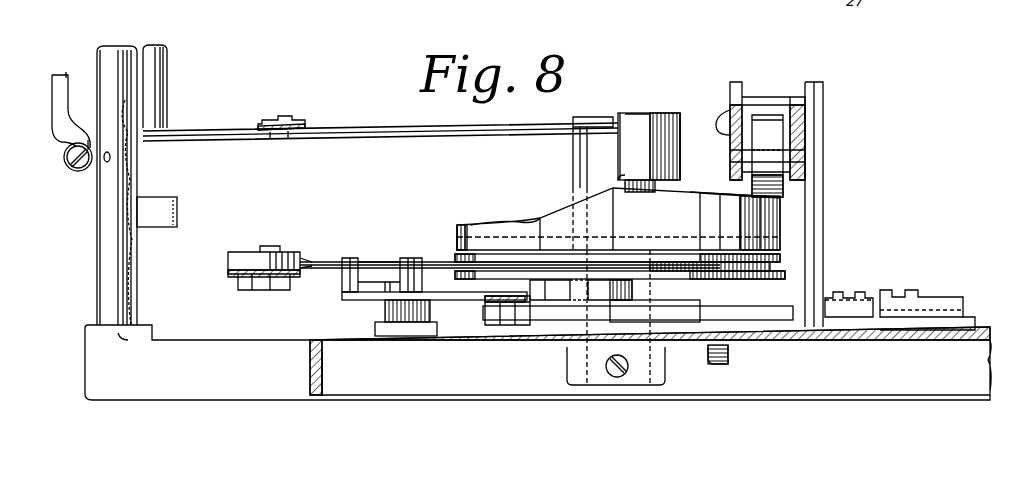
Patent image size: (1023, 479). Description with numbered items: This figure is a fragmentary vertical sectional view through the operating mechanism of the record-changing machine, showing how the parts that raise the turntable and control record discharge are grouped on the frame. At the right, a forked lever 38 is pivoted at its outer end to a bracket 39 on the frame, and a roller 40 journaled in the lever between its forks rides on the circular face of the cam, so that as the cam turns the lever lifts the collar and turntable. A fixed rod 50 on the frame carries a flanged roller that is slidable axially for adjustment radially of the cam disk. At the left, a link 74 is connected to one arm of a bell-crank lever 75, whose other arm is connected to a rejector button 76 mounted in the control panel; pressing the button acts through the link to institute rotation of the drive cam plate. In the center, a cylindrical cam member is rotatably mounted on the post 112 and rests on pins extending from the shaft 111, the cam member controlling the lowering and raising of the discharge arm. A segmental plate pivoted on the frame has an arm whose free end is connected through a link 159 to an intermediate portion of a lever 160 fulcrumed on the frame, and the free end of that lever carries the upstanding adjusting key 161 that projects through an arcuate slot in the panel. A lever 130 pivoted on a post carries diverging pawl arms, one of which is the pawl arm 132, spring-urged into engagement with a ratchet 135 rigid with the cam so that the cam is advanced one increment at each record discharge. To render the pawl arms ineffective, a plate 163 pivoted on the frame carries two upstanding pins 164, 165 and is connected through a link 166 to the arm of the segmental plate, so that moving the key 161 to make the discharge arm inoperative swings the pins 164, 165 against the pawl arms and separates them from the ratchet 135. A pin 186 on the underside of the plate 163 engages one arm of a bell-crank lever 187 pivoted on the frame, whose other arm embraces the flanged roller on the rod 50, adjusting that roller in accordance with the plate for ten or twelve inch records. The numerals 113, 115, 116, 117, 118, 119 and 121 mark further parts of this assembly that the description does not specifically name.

The forked lever 38 is at (805, 112).
The bracket 39 is at (823, 152).
The roller 40 is at (762, 114).
The fixed rod 50 is at (785, 312).
The link 74 is at (168, 202).
The bell-crank lever 75 is at (92, 172).
The rejector button 76 is at (66, 72).
The shaft 111 is at (572, 215).
The post 112 is at (452, 236).
The column 113 is at (573, 154).
The lower plate 115 is at (782, 275).
The lip 116 is at (540, 280).
The block 117 is at (563, 280).
The block 118 is at (605, 278).
The nut 119 is at (718, 364).
The top surface 121 is at (695, 190).
The lever 130 is at (228, 265).
The pawl arm 132 is at (376, 258).
The ratchet 135 is at (770, 266).
The link 159 is at (306, 126).
The lever 160 is at (382, 128).
The adjusting key 161 is at (167, 90).
The plate 163 is at (368, 302).
The pin 164 is at (342, 288).
The pin 165 is at (408, 276).
The link 166 is at (490, 306).
The pin 186 is at (522, 325).
The bell-crank lever 187 is at (590, 322).